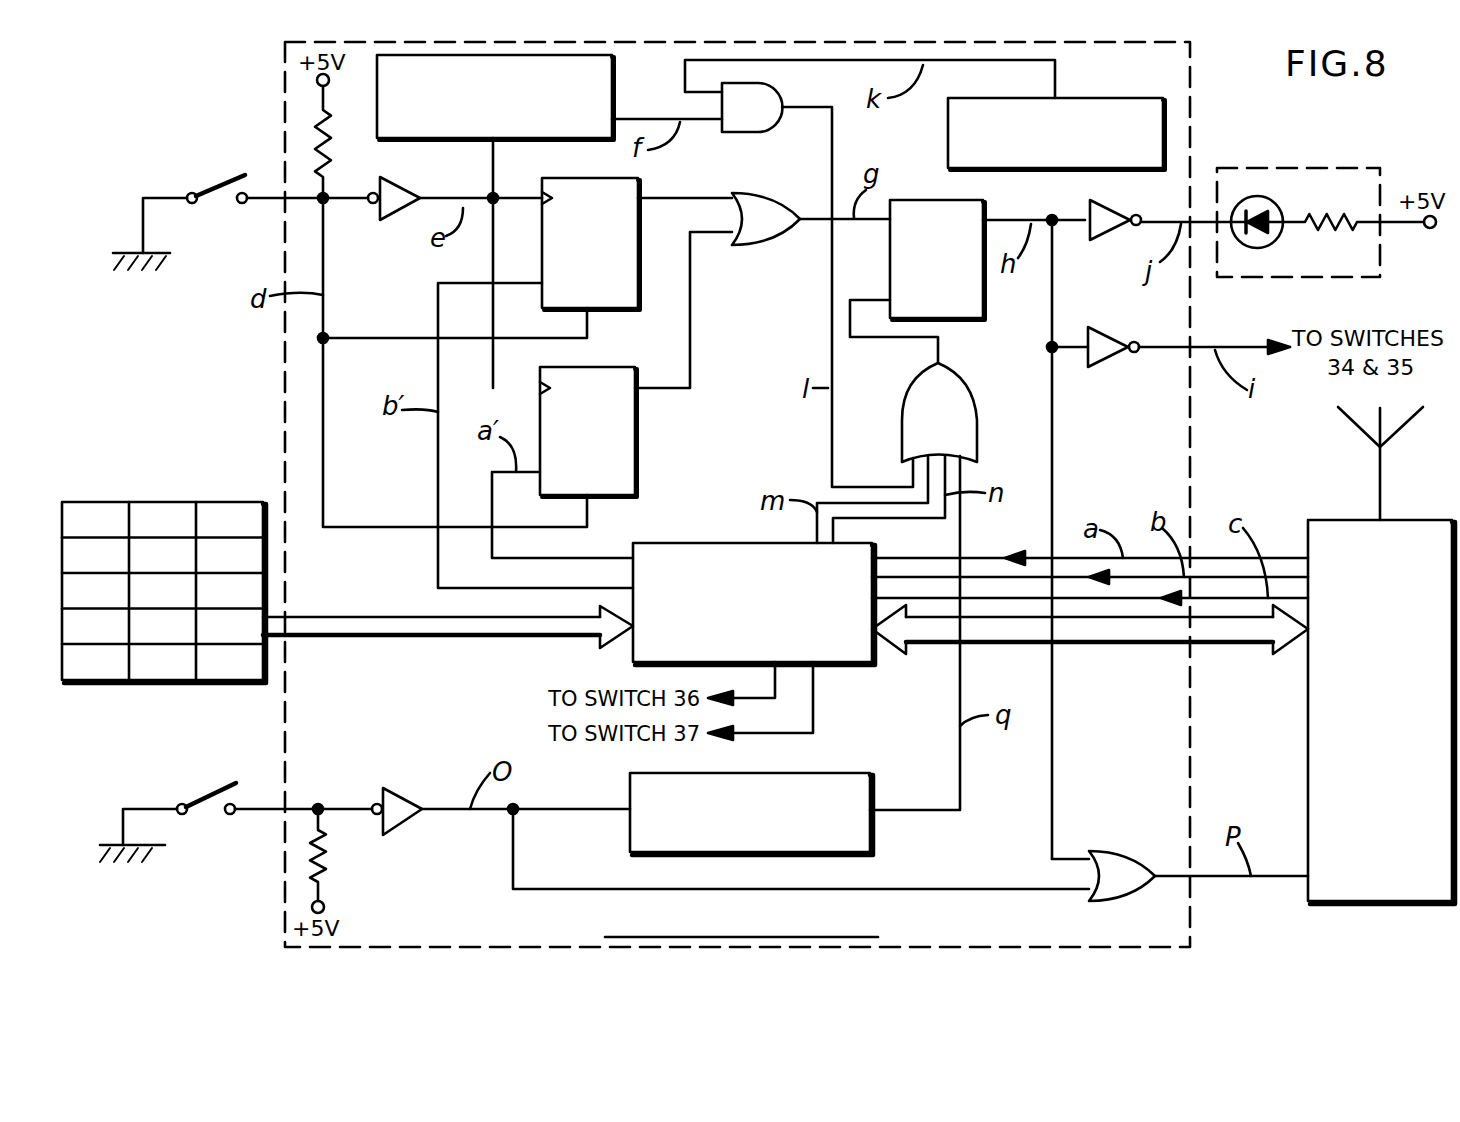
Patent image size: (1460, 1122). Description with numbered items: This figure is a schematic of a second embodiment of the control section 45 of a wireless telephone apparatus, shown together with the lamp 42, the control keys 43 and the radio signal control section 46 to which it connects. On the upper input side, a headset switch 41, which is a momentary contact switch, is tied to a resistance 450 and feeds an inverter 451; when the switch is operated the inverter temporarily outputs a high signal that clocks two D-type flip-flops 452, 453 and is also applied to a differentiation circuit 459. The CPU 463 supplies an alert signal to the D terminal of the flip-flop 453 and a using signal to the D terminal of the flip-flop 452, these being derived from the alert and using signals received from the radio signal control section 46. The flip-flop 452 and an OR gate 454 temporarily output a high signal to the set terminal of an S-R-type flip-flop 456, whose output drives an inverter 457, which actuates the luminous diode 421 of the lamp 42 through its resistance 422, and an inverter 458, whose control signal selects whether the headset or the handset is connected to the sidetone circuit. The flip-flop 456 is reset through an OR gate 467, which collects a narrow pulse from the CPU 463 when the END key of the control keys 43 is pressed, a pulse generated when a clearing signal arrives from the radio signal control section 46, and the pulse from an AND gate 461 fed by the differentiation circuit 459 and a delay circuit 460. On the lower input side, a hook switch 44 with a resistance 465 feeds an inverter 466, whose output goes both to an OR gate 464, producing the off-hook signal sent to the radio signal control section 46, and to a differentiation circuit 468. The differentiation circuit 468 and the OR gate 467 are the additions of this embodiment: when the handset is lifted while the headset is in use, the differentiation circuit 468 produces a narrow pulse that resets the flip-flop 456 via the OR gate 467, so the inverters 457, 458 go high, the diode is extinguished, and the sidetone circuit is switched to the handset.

The headset switch 41 is at (226, 183).
The lamp 42 is at (1319, 196).
The luminous diode 421 is at (1257, 196).
The resistance 422 is at (1333, 222).
The control keys 43 is at (158, 502).
The hook switch 44 is at (207, 791).
The control section 45 is at (737, 494).
The radio signal control section 46 is at (1323, 520).
The resistance 450 is at (318, 130).
The inverter 451 is at (403, 220).
The D-type flip-flop 452 is at (612, 315).
The D-type flip-flop 453 is at (625, 441).
The OR gate 454 is at (778, 244).
The S-R-type flip-flop 456 is at (975, 293).
The inverter 457 is at (1111, 240).
The inverter 458 is at (1108, 367).
The differentiation circuit 459 is at (466, 141).
The delay circuit 460 is at (1085, 103).
The AND gate 461 is at (770, 103).
The CPU 463 is at (733, 548).
The OR gate 464 is at (1119, 858).
The resistance 465 is at (325, 860).
The inverter 466 is at (404, 800).
The OR gate 467 is at (948, 390).
The differentiation circuit 468 is at (860, 837).